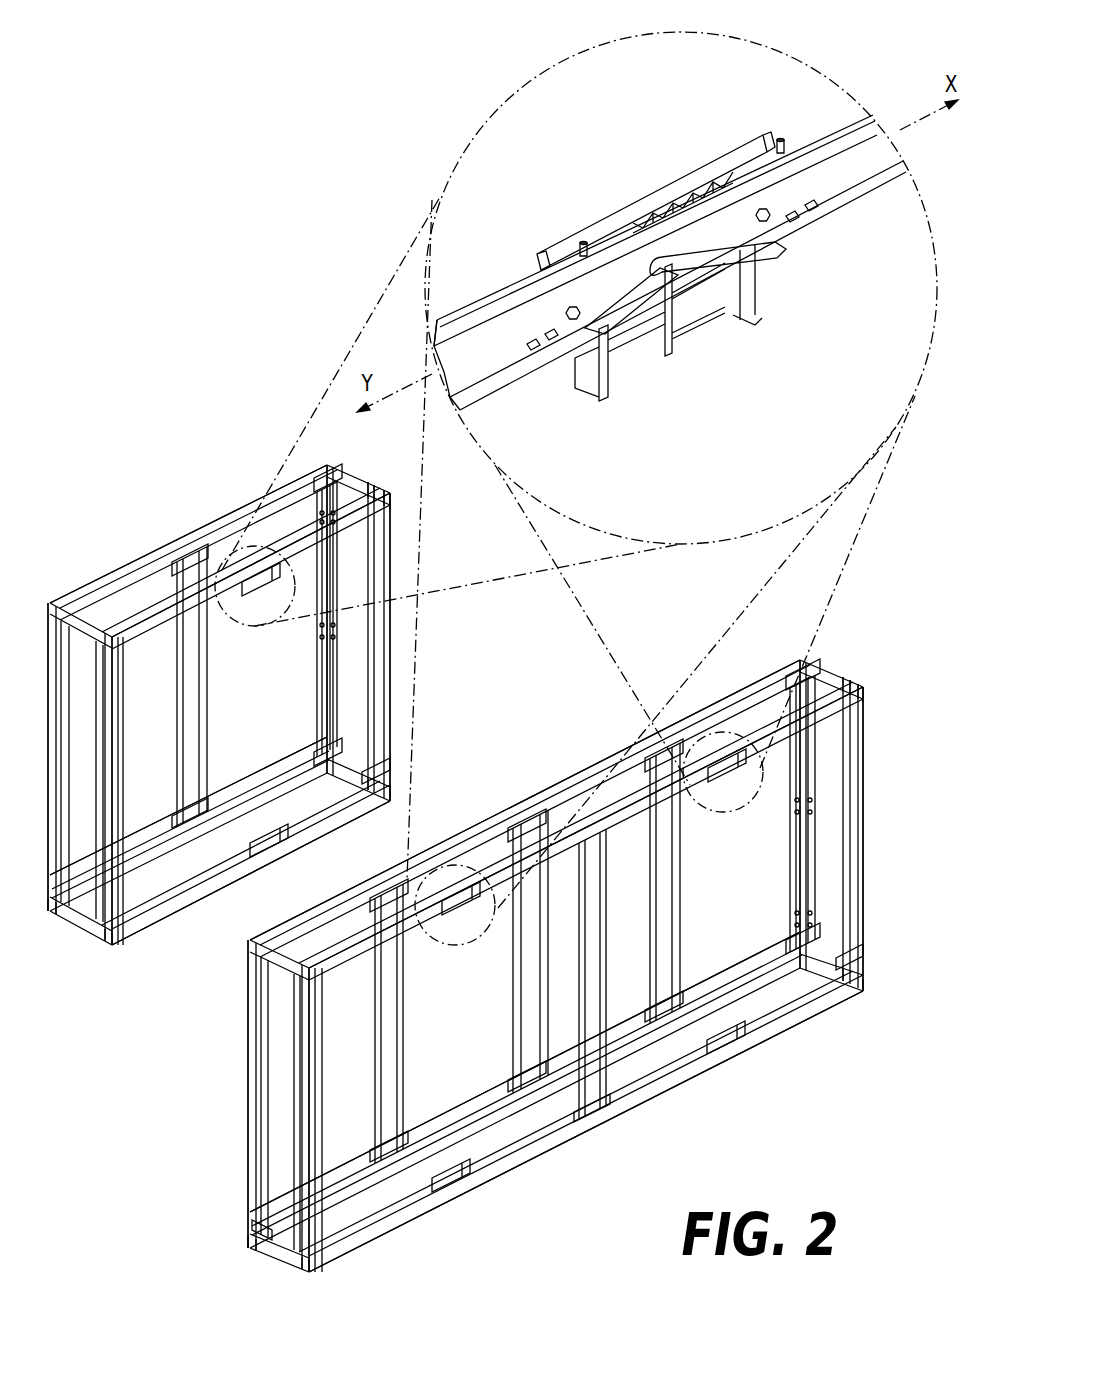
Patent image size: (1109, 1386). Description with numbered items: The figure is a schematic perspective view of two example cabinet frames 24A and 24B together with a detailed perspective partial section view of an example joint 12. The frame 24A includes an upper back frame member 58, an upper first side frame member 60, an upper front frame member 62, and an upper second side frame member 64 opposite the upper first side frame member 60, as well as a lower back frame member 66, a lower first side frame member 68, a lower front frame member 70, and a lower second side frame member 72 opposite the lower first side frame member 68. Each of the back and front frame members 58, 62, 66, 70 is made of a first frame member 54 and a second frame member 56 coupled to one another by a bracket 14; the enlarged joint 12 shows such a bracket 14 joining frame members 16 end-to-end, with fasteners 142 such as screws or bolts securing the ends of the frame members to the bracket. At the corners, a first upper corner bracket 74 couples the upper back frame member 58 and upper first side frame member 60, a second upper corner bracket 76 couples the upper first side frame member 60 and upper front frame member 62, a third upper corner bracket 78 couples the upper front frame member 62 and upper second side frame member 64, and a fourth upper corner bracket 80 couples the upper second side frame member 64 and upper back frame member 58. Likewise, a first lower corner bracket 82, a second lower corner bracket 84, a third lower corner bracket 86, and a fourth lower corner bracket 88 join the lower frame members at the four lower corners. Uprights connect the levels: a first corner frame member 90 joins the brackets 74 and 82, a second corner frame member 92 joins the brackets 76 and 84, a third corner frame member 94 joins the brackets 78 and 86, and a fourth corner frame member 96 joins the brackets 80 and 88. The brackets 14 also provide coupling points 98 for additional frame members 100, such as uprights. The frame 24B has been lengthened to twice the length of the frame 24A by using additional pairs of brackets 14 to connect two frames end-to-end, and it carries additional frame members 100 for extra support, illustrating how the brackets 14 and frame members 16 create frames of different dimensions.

The joint 12 is at (690, 155).
The bracket 14 is at (657, 195).
The frame member 16 is at (873, 110).
The frame 24A is at (143, 512).
The frame 24B is at (578, 742).
The first frame member 54 is at (887, 153).
The second frame member 56 is at (445, 330).
The upper back frame member 58 is at (237, 520).
The upper first side frame member 60 is at (350, 480).
The upper front frame member 62 is at (297, 537).
The upper second side frame member 64 is at (92, 605).
The lower back frame member 66 is at (235, 790).
The lower first side frame member 68 is at (370, 760).
The lower front frame member 70 is at (322, 830).
The lower second side frame member 72 is at (70, 940).
The first upper corner bracket 74 is at (318, 466).
The second upper corner bracket 76 is at (395, 493).
The third upper corner bracket 78 is at (121, 652).
The fourth upper corner bracket 80 is at (55, 600).
The first lower corner bracket 82 is at (312, 742).
The second lower corner bracket 84 is at (390, 790).
The third lower corner bracket 86 is at (118, 948).
The fourth lower corner bracket 88 is at (255, 1228).
The first corner frame member 90 is at (317, 603).
The second corner frame member 92 is at (392, 636).
The third corner frame member 94 is at (125, 748).
The fourth corner frame member 96 is at (76, 738).
The coupling point 98 is at (178, 590).
The frame member 100 is at (210, 708).
The fastener 142 is at (768, 208).